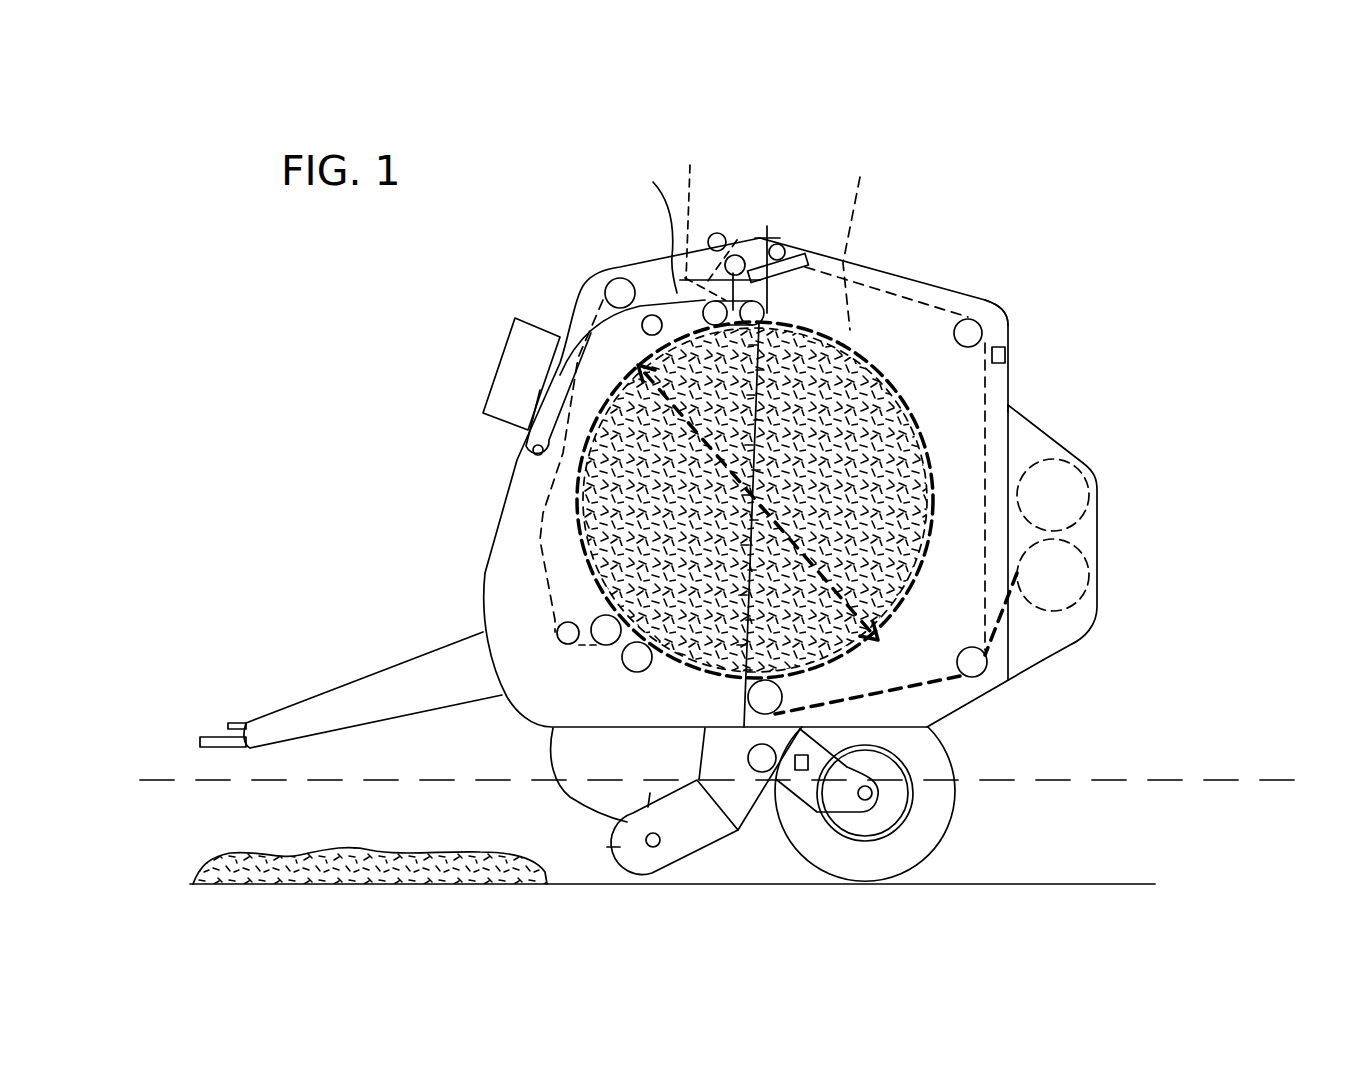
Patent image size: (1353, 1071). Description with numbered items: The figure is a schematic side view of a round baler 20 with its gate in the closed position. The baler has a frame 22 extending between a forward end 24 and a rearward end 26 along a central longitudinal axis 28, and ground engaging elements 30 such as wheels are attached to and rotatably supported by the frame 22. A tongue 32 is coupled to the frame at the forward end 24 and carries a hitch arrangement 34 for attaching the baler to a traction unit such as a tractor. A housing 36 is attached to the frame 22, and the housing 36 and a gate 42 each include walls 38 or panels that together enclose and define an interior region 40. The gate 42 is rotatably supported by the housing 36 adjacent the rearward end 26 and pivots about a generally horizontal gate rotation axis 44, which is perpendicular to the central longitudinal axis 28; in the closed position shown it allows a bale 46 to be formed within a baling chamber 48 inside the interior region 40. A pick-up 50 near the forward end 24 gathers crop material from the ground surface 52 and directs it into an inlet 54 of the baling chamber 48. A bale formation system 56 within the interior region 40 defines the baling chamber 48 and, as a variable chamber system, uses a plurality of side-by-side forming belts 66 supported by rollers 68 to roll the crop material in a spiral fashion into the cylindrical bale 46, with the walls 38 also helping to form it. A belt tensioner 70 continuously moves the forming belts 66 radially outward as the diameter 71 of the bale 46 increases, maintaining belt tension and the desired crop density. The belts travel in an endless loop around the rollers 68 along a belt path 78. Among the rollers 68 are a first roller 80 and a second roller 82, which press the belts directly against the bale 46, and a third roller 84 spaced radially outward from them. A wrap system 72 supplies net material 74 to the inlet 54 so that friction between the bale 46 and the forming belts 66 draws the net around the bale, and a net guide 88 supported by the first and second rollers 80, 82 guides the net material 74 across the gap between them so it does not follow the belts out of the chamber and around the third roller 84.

The round baler 20 is at (908, 78).
The frame 22 is at (733, 787).
The forward end 24 is at (482, 580).
The rearward end 26 is at (1008, 683).
The central longitudinal axis 28 is at (190, 782).
The ground engaging elements 30 is at (918, 843).
The tongue 32 is at (337, 705).
The hitch arrangement 34 is at (213, 733).
The housing 36 is at (607, 287).
The walls 38 is at (517, 468).
The interior region 40 is at (875, 320).
The gate 42 is at (933, 281).
The gate rotation axis 44 is at (773, 228).
The bale 46 is at (853, 413).
The baling chamber 48 is at (928, 440).
The pick-up 50 is at (633, 860).
The ground surface 52 is at (1125, 883).
The inlet 54 is at (672, 670).
The bale formation system 56 is at (573, 320).
The forming belts 66 is at (1010, 412).
The rollers 68 is at (620, 292).
The belt tensioner 70 is at (580, 337).
The diameter 71 is at (749, 502).
The wrap system 72 is at (1097, 530).
The net material 74 is at (866, 233).
The belt path 78 is at (678, 205).
The first roller 80 is at (753, 318).
The second roller 82 is at (648, 220).
The third roller 84 is at (735, 226).
The net guide 88 is at (727, 242).